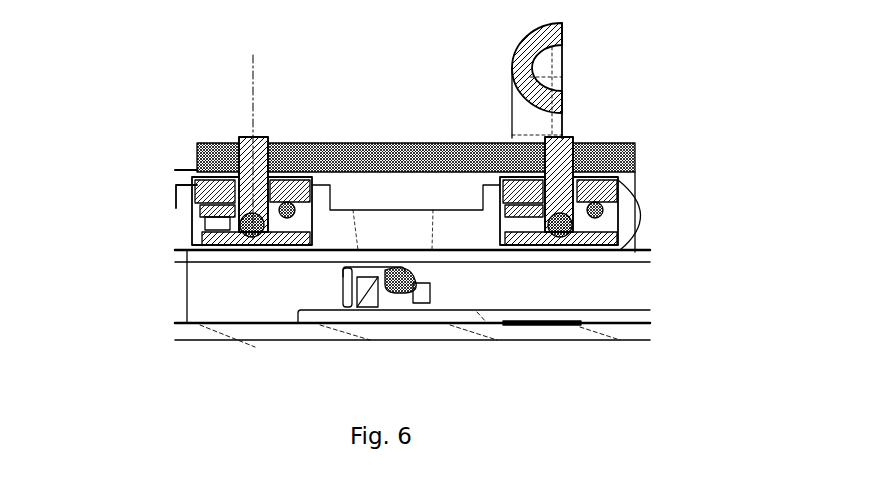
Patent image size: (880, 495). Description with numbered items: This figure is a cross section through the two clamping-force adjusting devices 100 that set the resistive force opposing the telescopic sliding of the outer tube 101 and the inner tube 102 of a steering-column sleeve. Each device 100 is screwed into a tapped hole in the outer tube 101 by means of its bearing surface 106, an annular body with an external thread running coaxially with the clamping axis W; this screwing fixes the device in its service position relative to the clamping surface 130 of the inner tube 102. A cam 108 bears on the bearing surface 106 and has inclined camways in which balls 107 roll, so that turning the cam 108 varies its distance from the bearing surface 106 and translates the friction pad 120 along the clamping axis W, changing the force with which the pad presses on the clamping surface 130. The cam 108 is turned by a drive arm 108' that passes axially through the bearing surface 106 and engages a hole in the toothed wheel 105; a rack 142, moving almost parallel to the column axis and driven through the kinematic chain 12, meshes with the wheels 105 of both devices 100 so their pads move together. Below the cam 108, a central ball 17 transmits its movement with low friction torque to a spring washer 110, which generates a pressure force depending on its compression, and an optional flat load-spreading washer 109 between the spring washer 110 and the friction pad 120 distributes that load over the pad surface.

The clamping axis W is at (252, 60).
The resistive-force adjusting device 100 is at (277, 133).
The kinematic chain 12 is at (367, 110).
The outer tube 101 is at (379, 200).
The rack 142 is at (449, 143).
The drive arm 108' is at (434, 149).
The toothed wheel 105 is at (197, 150).
The bearing surface 106 is at (183, 185).
The cam 108 is at (413, 219).
The spring washer 110 is at (200, 240).
The friction pad 120 is at (197, 250).
The inner tube 102 is at (232, 262).
The ball 107 is at (605, 212).
The load-spreading washer 109 is at (615, 242).
The central ball 17 is at (577, 245).
The clamping surface 130 is at (298, 265).